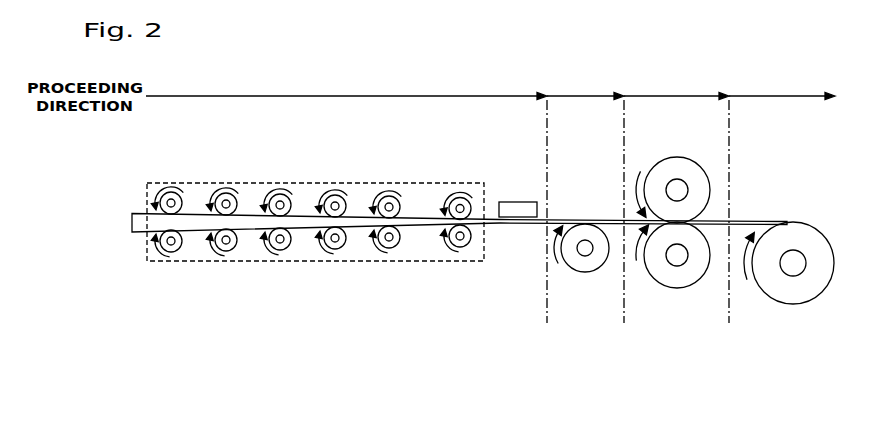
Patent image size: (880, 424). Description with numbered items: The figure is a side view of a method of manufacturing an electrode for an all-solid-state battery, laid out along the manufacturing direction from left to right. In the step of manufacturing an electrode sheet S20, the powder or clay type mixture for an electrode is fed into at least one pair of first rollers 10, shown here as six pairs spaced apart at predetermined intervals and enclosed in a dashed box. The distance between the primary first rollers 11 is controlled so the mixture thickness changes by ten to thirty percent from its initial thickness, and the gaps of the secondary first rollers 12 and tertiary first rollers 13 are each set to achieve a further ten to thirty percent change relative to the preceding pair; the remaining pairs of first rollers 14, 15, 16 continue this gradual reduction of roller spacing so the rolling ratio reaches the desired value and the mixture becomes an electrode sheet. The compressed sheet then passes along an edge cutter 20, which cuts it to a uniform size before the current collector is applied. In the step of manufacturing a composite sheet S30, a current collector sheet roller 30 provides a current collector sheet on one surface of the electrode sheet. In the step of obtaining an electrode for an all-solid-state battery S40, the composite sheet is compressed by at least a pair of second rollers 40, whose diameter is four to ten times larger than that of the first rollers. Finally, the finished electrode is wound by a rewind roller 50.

The first rollers 10 is at (307, 214).
The primary first rollers 11 is at (176, 250).
The secondary first rollers 12 is at (231, 249).
The tertiary first rollers 13 is at (285, 248).
The fourth roller pair 14 is at (340, 247).
The fifth roller pair 15 is at (394, 246).
The sixth roller pair 16 is at (465, 245).
The edge cutter 20 is at (520, 192).
The current collector sheet roller 30 is at (583, 286).
The second rollers 40 is at (676, 300).
The rewind roller 50 is at (786, 315).
The manufacturing an electrode sheet S20 is at (346, 88).
The manufacturing a composite sheet S30 is at (585, 88).
The obtaining an electrode for an all-solid-state battery S40 is at (676, 88).